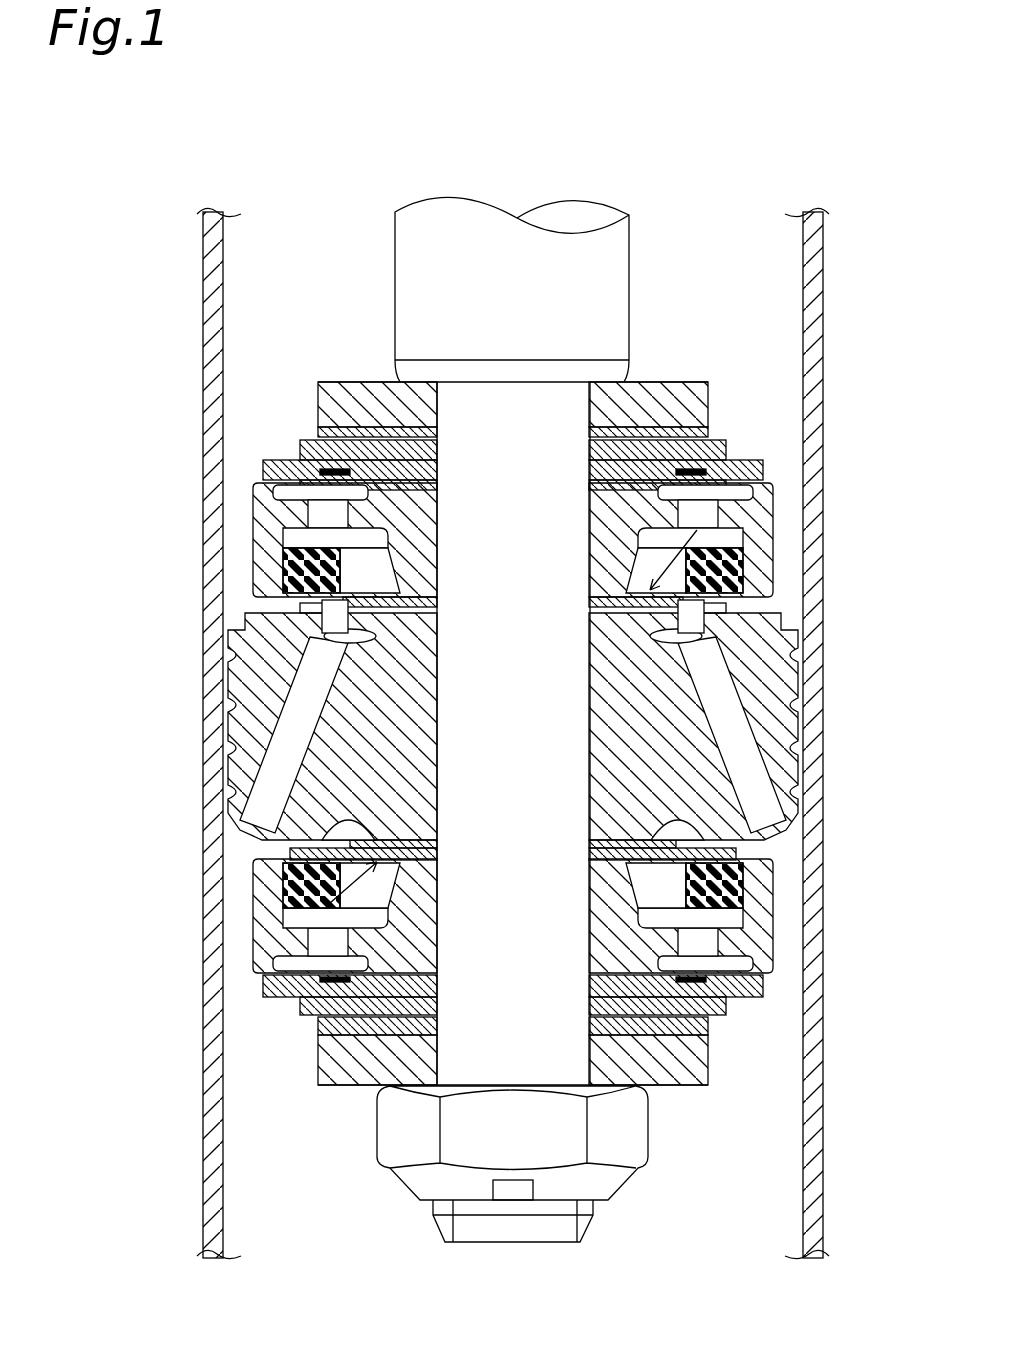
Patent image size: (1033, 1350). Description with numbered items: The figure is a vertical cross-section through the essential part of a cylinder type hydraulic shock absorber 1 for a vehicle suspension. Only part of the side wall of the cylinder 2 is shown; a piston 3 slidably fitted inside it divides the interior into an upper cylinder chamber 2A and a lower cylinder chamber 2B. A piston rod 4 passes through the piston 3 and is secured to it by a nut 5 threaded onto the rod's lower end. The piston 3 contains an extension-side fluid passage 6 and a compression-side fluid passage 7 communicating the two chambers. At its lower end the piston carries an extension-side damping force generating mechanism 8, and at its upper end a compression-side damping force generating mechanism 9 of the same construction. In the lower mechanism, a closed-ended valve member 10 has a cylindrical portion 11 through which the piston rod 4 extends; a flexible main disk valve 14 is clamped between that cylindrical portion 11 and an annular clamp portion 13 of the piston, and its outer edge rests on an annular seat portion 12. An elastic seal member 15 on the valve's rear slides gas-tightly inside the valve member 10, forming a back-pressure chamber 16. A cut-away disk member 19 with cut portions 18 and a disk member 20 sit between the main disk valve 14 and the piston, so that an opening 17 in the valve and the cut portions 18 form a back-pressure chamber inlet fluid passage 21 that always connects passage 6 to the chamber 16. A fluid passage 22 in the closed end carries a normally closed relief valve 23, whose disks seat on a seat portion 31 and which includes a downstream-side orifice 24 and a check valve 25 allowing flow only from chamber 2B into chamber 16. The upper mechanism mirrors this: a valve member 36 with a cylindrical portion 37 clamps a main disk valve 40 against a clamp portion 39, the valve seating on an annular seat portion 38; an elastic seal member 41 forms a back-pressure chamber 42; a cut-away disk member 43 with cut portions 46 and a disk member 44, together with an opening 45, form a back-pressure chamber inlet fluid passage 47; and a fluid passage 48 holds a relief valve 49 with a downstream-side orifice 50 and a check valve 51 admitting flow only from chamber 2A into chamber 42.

The hydraulic shock absorber 1 is at (516, 672).
The cylinder 2 is at (556, 733).
The upper cylinder chamber 2A is at (549, 733).
The lower cylinder chamber 2B is at (775, 1258).
The piston 3 is at (517, 720).
The piston rod 4 is at (443, 220).
The nut 5 is at (428, 1182).
The extension-side fluid passage 6 is at (517, 720).
The compression-side fluid passage 7 is at (517, 720).
The extension-side damping force generating mechanism 8 is at (523, 919).
The compression-side damping force generating mechanism 9 is at (508, 659).
The valve member 10 is at (585, 1079).
The cylindrical portion 11 is at (586, 918).
The annular seat portion 12 is at (586, 908).
The annular clamp portion 13 is at (566, 720).
The main disk valve 14 is at (695, 835).
The elastic seal member 15 is at (586, 920).
The back-pressure chamber 16 is at (586, 920).
The opening 17 is at (528, 919).
The cut portions 18 is at (523, 919).
The cut-away disk member 19 is at (517, 720).
The disk member 20 is at (517, 720).
The back-pressure chamber inlet fluid passage 21 is at (528, 919).
The fluid passage 22 is at (700, 945).
The relief valve 23 is at (573, 1079).
The downstream-side orifice 24 is at (582, 1079).
The check valve 25 is at (730, 975).
The seat portion 31 is at (526, 1079).
The valve member 36 is at (508, 659).
The cylindrical portion 37 is at (519, 659).
The annular seat portion 38 is at (454, 671).
The clamp portion 39 is at (517, 720).
The main disk valve 40 is at (355, 630).
The elastic seal member 41 is at (514, 659).
The back-pressure chamber 42 is at (514, 659).
The cut-away disk member 43 is at (567, 720).
The disk member 44 is at (567, 720).
The opening 45 is at (515, 671).
The cut portions 46 is at (509, 671).
The back-pressure chamber inlet fluid passage 47 is at (519, 671).
The fluid passage 48 is at (262, 488).
The relief valve 49 is at (447, 425).
The downstream-side orifice 50 is at (447, 436).
The check valve 51 is at (447, 386).